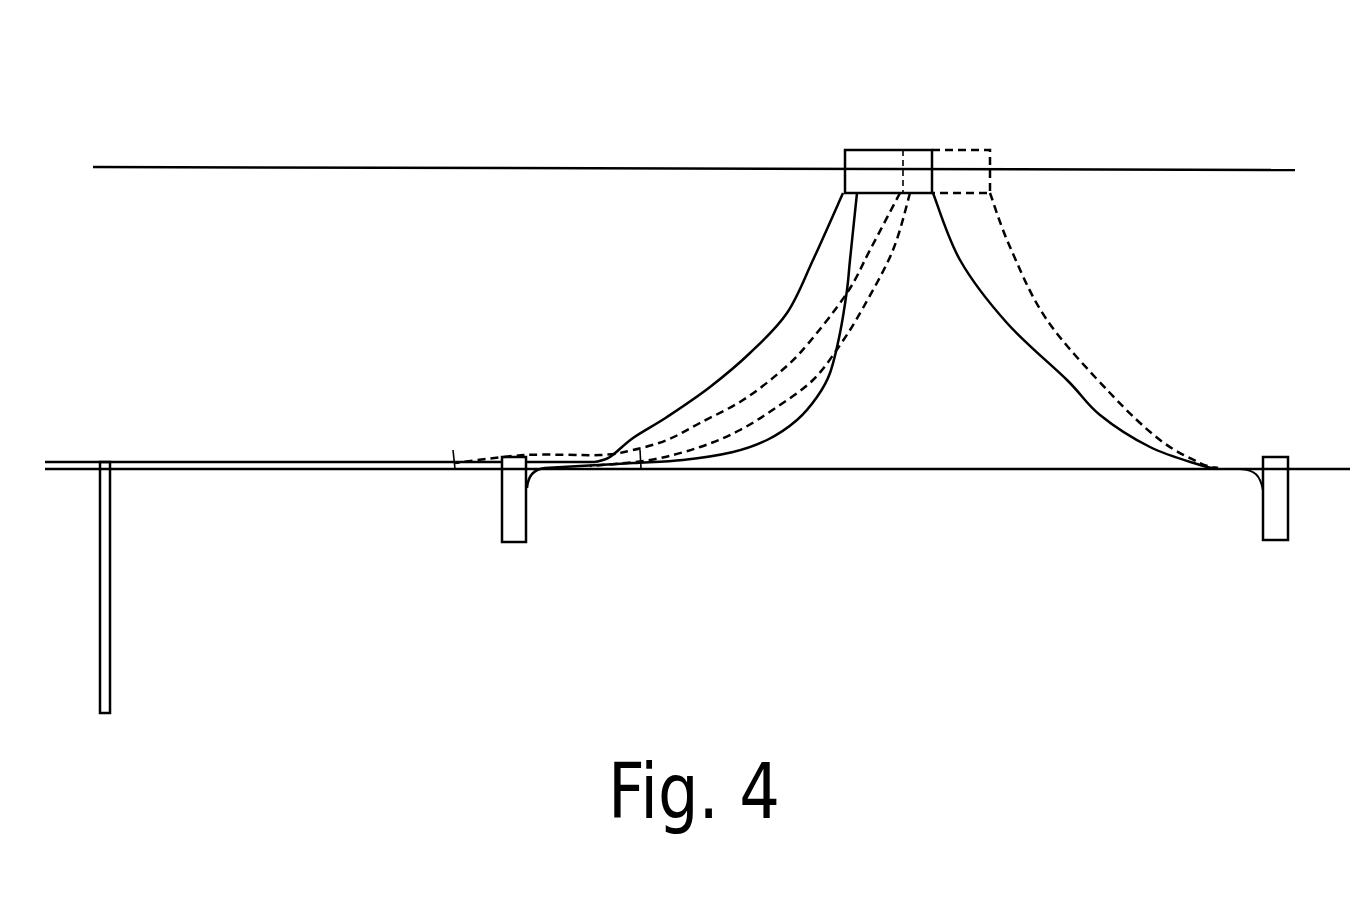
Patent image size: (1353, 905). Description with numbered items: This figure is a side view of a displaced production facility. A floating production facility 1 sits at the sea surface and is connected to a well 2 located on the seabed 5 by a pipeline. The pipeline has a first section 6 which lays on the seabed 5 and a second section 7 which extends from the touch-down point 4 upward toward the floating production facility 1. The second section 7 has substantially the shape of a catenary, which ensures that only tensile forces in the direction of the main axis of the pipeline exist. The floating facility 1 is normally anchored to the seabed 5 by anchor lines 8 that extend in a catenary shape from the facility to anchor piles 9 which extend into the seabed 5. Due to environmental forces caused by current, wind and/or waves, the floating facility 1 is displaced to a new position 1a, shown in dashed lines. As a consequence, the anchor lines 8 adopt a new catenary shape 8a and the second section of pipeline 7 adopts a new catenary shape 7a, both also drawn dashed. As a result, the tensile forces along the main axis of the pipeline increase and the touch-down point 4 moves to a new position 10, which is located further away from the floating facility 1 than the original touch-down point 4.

The production facility 1 is at (901, 135).
The new position of the floating facility 1a is at (990, 150).
The well 2 is at (97, 548).
The touch-down point 4 is at (640, 471).
The seabed 5 is at (964, 466).
The first section of the pipeline 6 is at (354, 457).
The second section of the pipeline 7 is at (819, 401).
The new catenary shape of the second section of the pipeline 7a is at (858, 310).
The anchor line 8 is at (709, 387).
The new catenary shape of the anchor lines 8a is at (805, 343).
The anchor pile 9 is at (1292, 542).
The new position of the touch-down point 10 is at (452, 473).